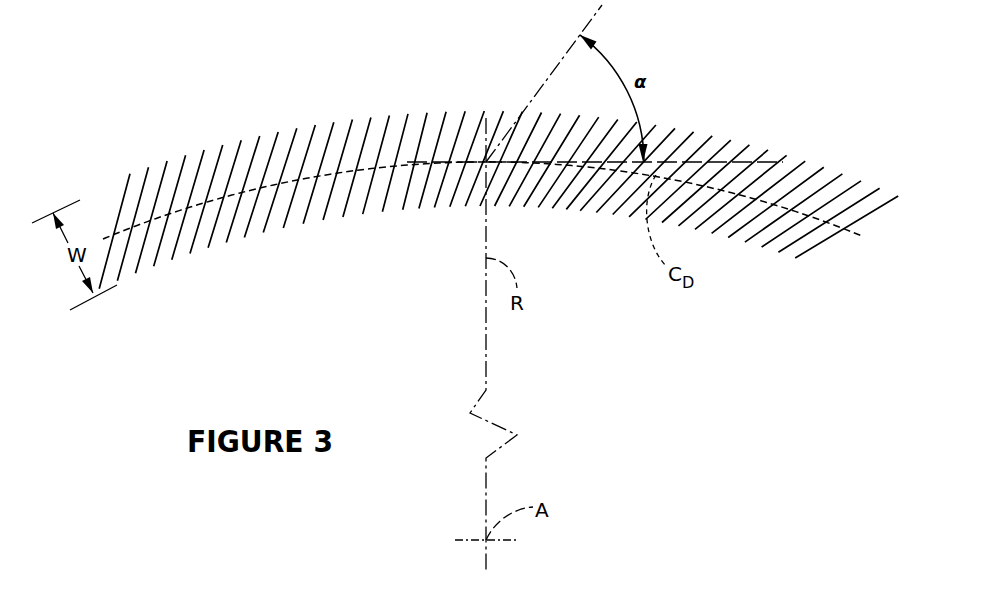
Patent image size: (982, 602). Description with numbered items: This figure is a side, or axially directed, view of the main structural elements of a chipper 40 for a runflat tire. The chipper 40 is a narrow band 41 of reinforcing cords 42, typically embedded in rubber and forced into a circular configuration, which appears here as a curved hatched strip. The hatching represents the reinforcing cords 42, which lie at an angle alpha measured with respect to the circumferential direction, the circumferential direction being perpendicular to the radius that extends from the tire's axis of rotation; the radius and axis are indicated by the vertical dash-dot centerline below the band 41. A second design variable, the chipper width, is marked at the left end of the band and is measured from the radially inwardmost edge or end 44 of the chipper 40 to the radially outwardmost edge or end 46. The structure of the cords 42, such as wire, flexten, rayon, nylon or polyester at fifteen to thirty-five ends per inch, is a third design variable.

The chipper 40 is at (236, 84).
The narrow band 41 is at (415, 120).
The reinforcing cords 42 is at (392, 118).
The radially inwardmost edge 44 is at (240, 240).
The radially outwardmost edge 46 is at (195, 158).